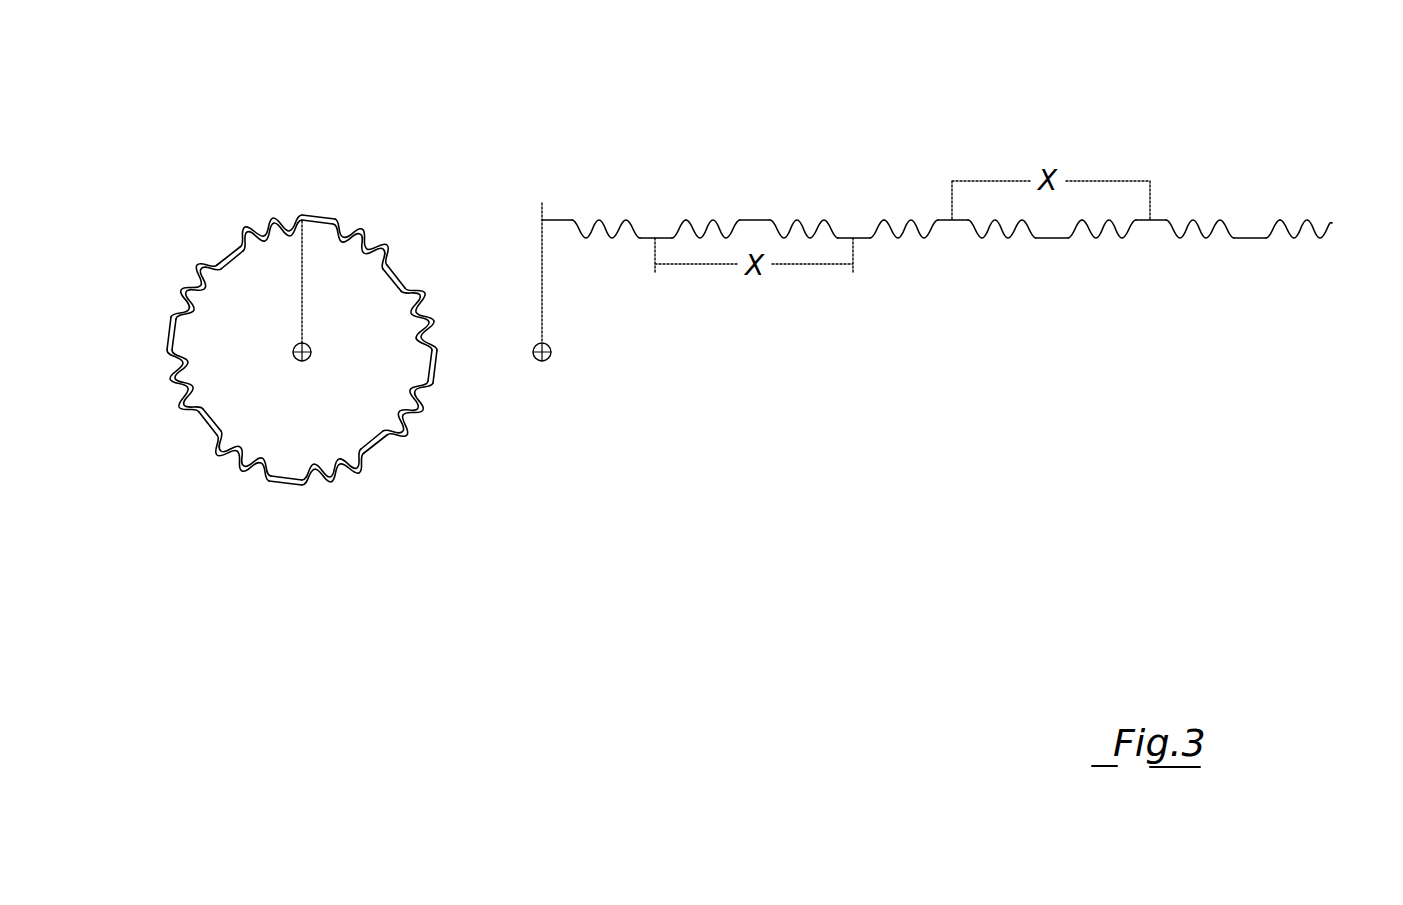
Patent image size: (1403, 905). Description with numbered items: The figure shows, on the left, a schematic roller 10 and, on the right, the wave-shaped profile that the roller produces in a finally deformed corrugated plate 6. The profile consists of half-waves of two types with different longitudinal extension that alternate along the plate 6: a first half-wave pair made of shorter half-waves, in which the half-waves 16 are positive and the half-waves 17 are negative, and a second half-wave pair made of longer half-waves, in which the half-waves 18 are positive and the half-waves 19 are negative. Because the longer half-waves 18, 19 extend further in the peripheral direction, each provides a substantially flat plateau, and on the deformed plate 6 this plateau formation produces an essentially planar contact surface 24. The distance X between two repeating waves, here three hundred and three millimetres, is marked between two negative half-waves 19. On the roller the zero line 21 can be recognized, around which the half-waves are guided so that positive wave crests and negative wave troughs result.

The plate 6 is at (1242, 302).
The toothed wheel 10 is at (378, 186).
The positive half-wave of first half-wave pair 16 is at (405, 432).
The negative half-wave of first half-wave pair 17 is at (342, 462).
The positive half-wave of second half-wave pair 18 is at (282, 483).
The negative half-wave of second half-wave pair 19 is at (210, 420).
The zero line 21 is at (223, 252).
The planar contact surface 24 is at (661, 234).